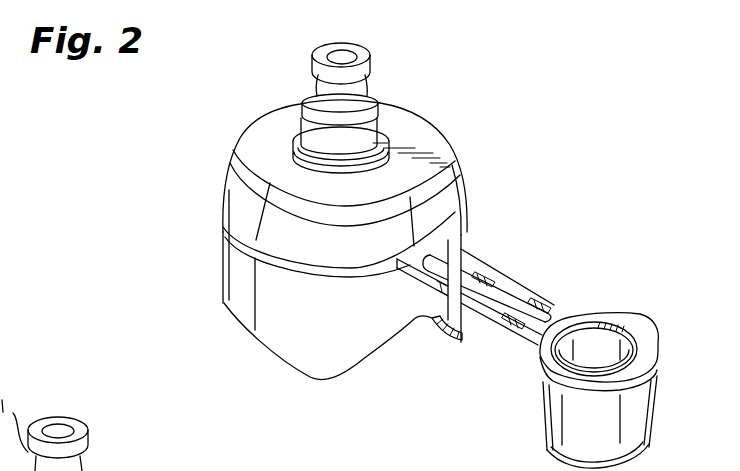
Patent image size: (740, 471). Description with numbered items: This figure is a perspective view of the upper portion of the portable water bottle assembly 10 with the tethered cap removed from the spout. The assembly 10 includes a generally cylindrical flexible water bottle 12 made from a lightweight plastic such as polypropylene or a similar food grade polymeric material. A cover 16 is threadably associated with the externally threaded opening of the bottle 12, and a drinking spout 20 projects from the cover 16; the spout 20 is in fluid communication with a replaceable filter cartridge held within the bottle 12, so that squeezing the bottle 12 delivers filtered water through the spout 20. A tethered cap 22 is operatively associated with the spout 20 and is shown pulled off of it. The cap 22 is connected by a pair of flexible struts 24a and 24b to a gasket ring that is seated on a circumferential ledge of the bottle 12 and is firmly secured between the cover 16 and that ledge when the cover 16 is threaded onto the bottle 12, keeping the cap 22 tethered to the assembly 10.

The water bottle assembly 10 is at (183, 196).
The water bottle 12 is at (278, 345).
The cover 16 is at (420, 133).
The drinking spout 20 is at (309, 64).
The tethered cap 22 is at (550, 415).
The flexible strut 24a is at (484, 322).
The flexible strut 24b is at (520, 282).